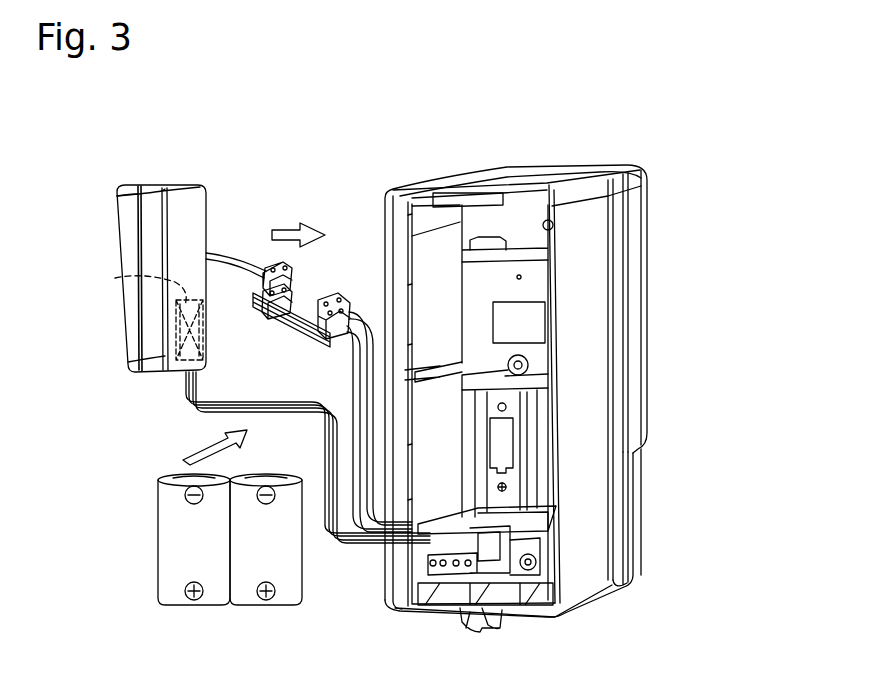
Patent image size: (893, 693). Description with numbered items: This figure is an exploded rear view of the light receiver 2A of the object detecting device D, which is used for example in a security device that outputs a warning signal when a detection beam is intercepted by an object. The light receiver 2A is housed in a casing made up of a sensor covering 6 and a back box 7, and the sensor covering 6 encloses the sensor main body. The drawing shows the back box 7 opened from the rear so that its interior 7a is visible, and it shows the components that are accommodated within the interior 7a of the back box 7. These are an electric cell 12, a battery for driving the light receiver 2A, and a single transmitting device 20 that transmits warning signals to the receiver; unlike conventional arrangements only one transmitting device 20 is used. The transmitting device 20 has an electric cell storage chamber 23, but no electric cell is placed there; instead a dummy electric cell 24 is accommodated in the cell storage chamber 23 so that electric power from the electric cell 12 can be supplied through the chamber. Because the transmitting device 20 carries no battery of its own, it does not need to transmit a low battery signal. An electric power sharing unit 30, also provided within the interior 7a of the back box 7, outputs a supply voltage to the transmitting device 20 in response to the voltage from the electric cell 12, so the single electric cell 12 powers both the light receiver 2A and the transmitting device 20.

The light receiver 2A is at (622, 124).
The object detecting device D is at (703, 124).
The sensor covering 6 is at (640, 297).
The back box 7 is at (597, 527).
The interior of the back box 7a is at (430, 263).
The electric cell 12 is at (158, 520).
The transmitting device 20 is at (170, 186).
The electric cell storage chamber 23 is at (112, 280).
The dummy electric cell 24 is at (175, 322).
The electric power sharing unit 30 is at (295, 326).